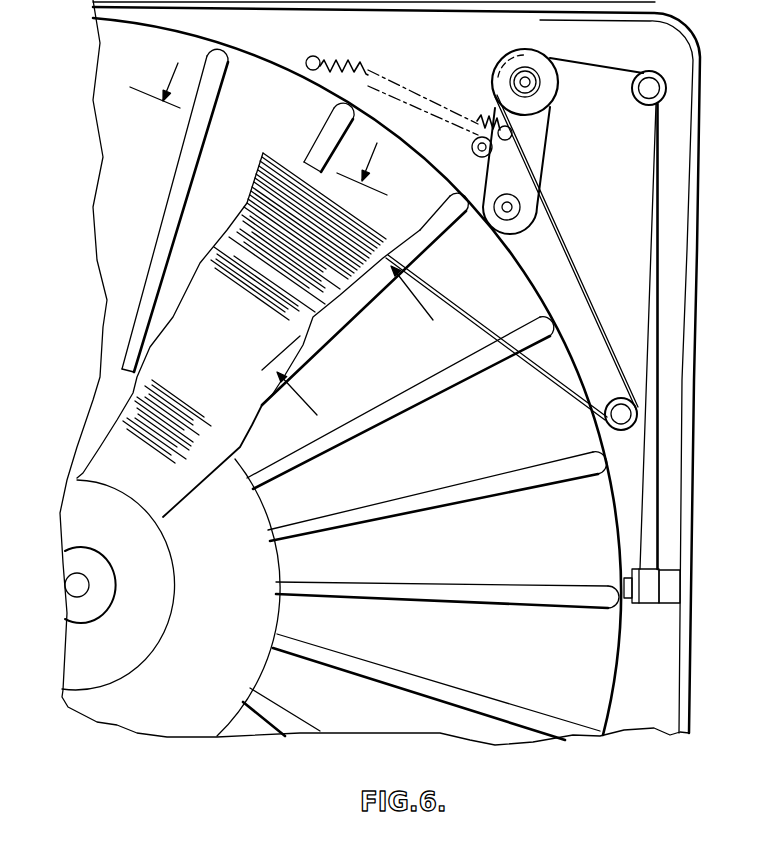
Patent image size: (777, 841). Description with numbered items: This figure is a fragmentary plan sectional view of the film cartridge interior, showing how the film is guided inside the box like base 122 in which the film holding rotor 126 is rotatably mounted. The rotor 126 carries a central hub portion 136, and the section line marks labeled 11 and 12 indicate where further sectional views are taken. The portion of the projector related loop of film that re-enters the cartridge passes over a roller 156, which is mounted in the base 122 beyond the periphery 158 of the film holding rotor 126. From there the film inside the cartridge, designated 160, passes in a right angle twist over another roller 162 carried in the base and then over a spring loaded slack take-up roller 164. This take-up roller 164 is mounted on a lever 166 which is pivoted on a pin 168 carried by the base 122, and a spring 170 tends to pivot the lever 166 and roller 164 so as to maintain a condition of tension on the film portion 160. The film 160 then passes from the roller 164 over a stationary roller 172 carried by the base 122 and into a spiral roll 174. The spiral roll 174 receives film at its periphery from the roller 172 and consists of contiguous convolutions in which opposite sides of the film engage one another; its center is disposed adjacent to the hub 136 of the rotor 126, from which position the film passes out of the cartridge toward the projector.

The section line 11- 11 is at (270, 129).
The section line 12- 12 is at (360, 340).
The box like base 122 is at (673, 268).
The film holding rotor 126 is at (573, 563).
The hub portion 136 is at (158, 520).
The roller 156 is at (647, 596).
The periphery 158 is at (611, 703).
The film 160 is at (603, 323).
The roller 162 is at (657, 80).
The spring loaded slack take-up roller 164 is at (552, 92).
The lever 166 is at (537, 147).
The pin 168 is at (507, 210).
The spring 170 is at (427, 93).
The stationary roller 172 is at (620, 422).
The spiral roll 174 is at (280, 167).